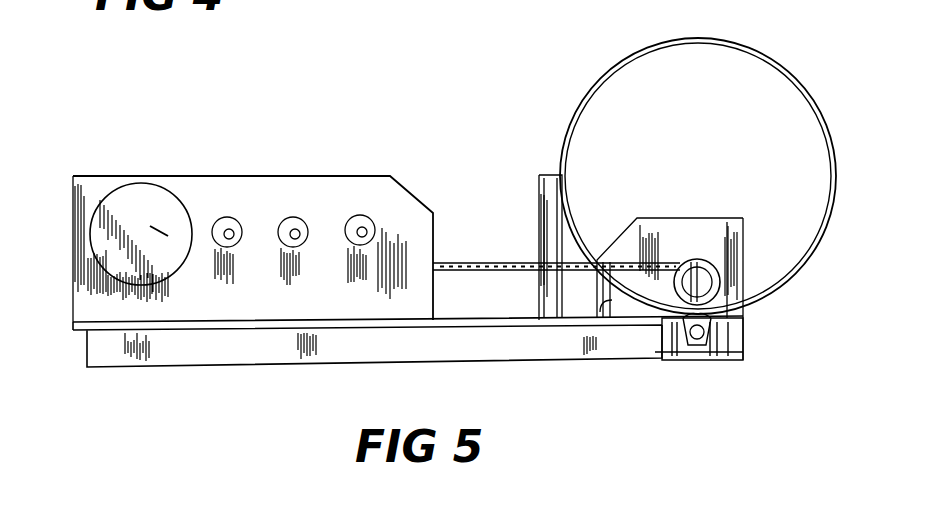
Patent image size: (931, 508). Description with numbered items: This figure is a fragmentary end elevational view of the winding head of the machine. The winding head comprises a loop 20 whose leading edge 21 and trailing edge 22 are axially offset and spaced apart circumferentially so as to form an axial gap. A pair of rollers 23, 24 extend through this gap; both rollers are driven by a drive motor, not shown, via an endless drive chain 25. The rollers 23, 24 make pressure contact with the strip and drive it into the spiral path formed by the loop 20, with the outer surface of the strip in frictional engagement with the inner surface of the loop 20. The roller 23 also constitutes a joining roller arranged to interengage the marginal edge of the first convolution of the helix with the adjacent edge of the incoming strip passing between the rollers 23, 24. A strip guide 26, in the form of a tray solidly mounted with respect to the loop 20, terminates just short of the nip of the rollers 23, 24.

The loop 20 is at (780, 62).
The leading edge 21 is at (725, 360).
The trailing edge 22 is at (687, 357).
The roller 23 is at (708, 283).
The roller 24 is at (700, 360).
The endless drive chain 25 is at (493, 262).
The strip guide 26 is at (518, 323).